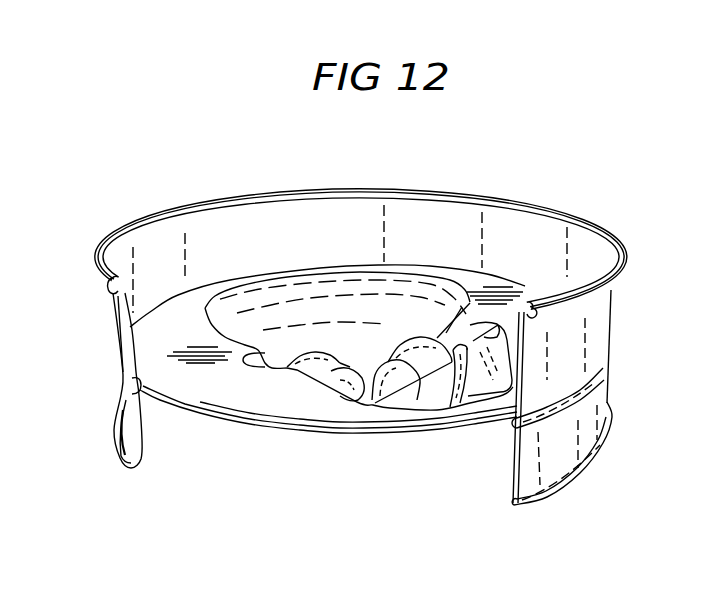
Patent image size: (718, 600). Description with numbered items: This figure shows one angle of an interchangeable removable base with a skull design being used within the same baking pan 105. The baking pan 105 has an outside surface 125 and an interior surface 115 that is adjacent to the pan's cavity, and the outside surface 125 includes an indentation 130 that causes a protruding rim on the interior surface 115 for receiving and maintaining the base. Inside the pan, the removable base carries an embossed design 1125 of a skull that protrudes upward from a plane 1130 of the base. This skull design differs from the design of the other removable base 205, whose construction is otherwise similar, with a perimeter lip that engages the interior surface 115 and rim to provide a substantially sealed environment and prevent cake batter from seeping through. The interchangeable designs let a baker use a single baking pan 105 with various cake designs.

The baking pan 105 is at (627, 249).
The interior surface 115 is at (547, 228).
The outside surface 125 is at (596, 310).
The indentation 130 is at (604, 370).
The removable base 205 is at (491, 282).
The embossed design 1125 is at (393, 283).
The plane 1130 is at (180, 315).